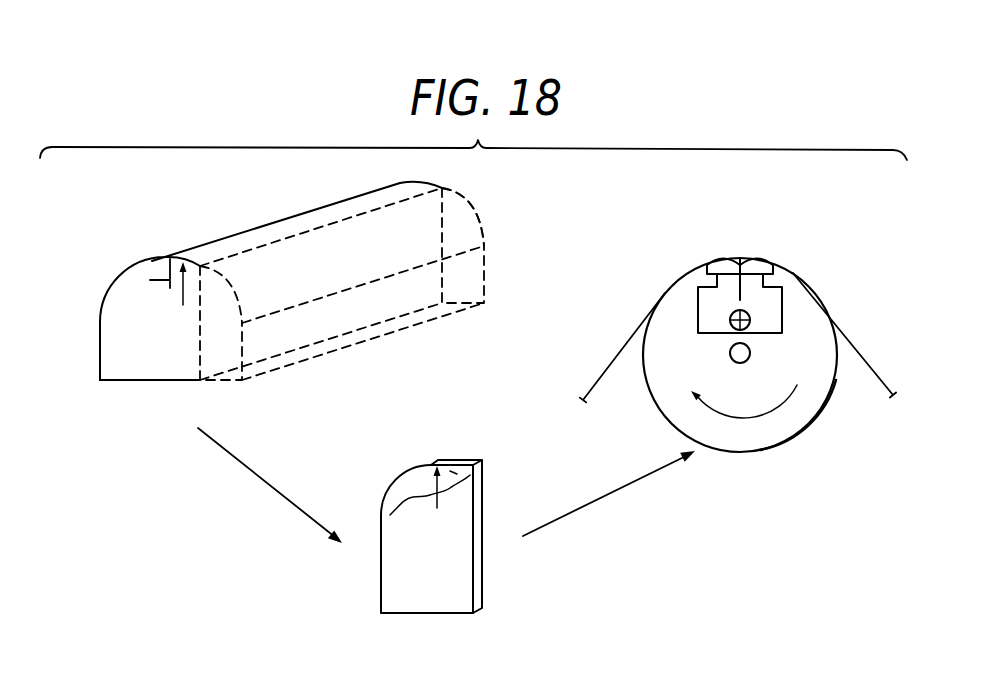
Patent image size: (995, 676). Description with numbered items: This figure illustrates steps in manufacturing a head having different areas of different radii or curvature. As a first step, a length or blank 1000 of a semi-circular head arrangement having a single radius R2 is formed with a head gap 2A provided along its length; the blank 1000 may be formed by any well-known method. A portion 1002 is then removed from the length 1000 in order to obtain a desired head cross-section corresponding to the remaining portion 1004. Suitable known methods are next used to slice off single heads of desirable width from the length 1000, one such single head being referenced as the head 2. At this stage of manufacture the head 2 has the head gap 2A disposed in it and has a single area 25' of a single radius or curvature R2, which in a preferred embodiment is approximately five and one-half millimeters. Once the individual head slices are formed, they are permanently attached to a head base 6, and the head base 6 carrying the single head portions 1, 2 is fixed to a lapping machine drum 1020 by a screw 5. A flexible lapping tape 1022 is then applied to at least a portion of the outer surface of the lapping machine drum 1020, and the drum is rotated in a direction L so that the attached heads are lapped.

The length or blank 1000 is at (179, 244).
The portion 1002 is at (479, 226).
The portion 1004 is at (99, 363).
The head gap 2A is at (150, 280).
The radius R2 is at (183, 305).
The head 2 is at (381, 598).
The single area 25' is at (430, 504).
The single head portion 1 is at (720, 263).
The head base 6 is at (782, 307).
The screw 5 is at (750, 323).
The lapping machine drum 1020 is at (824, 398).
The flexible lapping tape 1022 is at (847, 331).
The rotation direction L is at (718, 407).